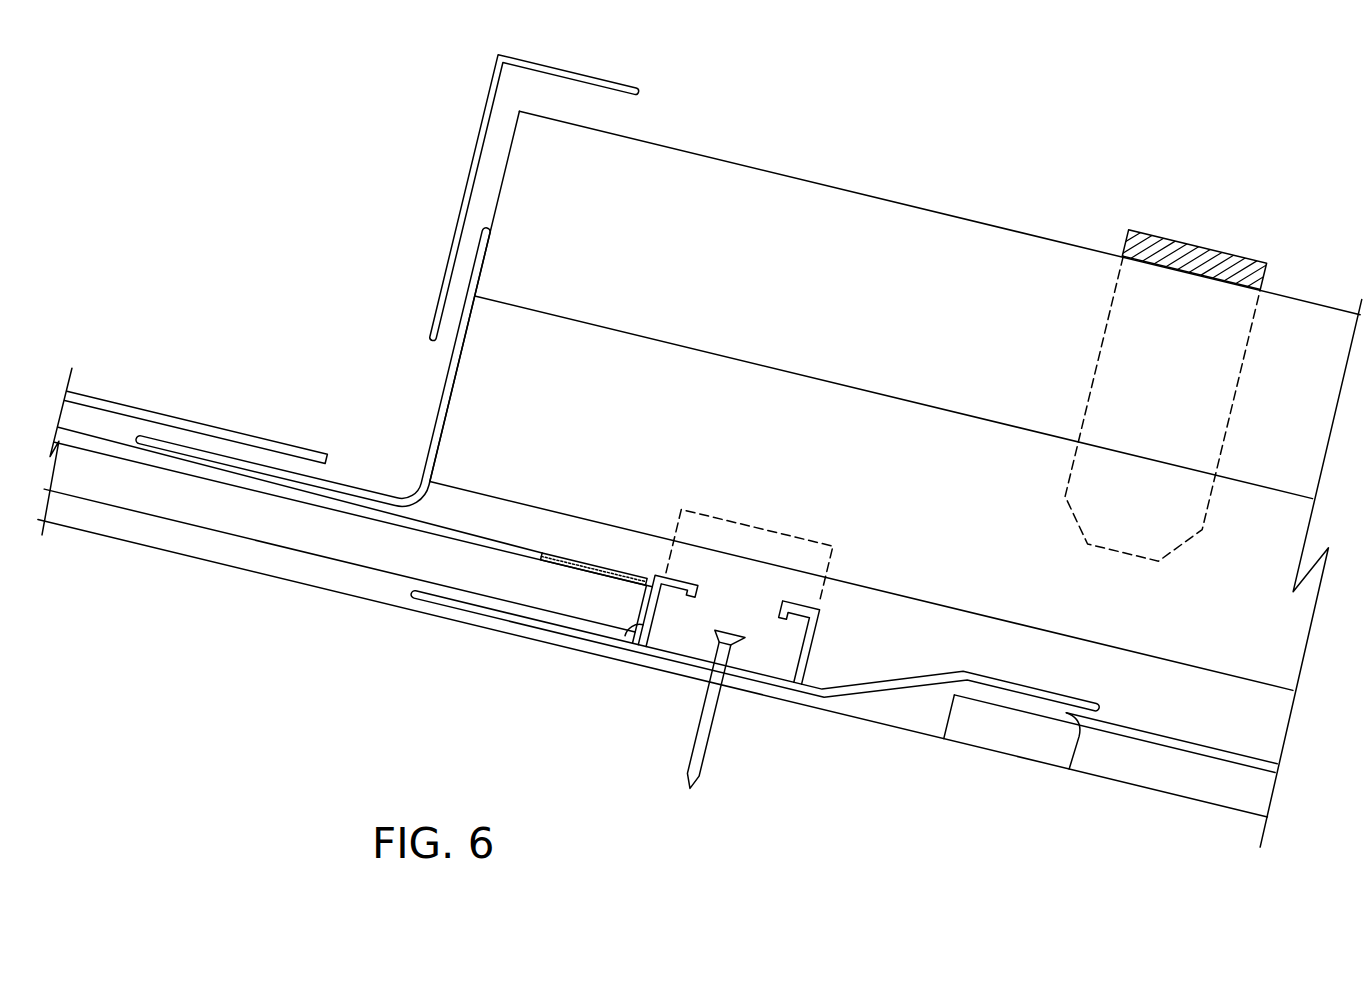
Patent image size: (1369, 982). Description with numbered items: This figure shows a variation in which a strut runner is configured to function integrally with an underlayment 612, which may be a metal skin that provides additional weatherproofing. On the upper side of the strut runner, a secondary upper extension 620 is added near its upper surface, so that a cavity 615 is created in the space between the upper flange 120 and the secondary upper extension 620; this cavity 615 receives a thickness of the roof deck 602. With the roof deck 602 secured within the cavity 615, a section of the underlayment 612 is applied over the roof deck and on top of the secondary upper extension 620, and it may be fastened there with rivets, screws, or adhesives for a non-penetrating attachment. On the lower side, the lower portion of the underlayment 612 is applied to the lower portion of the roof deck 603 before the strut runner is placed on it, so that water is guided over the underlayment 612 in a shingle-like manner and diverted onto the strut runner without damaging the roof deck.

The upper flange 120 is at (492, 610).
The roof deck 602 is at (565, 597).
The roof deck 603 is at (1145, 768).
The underlayment 612 is at (1068, 716).
The cavity 615 is at (636, 641).
The secondary upper extension 620 is at (657, 577).